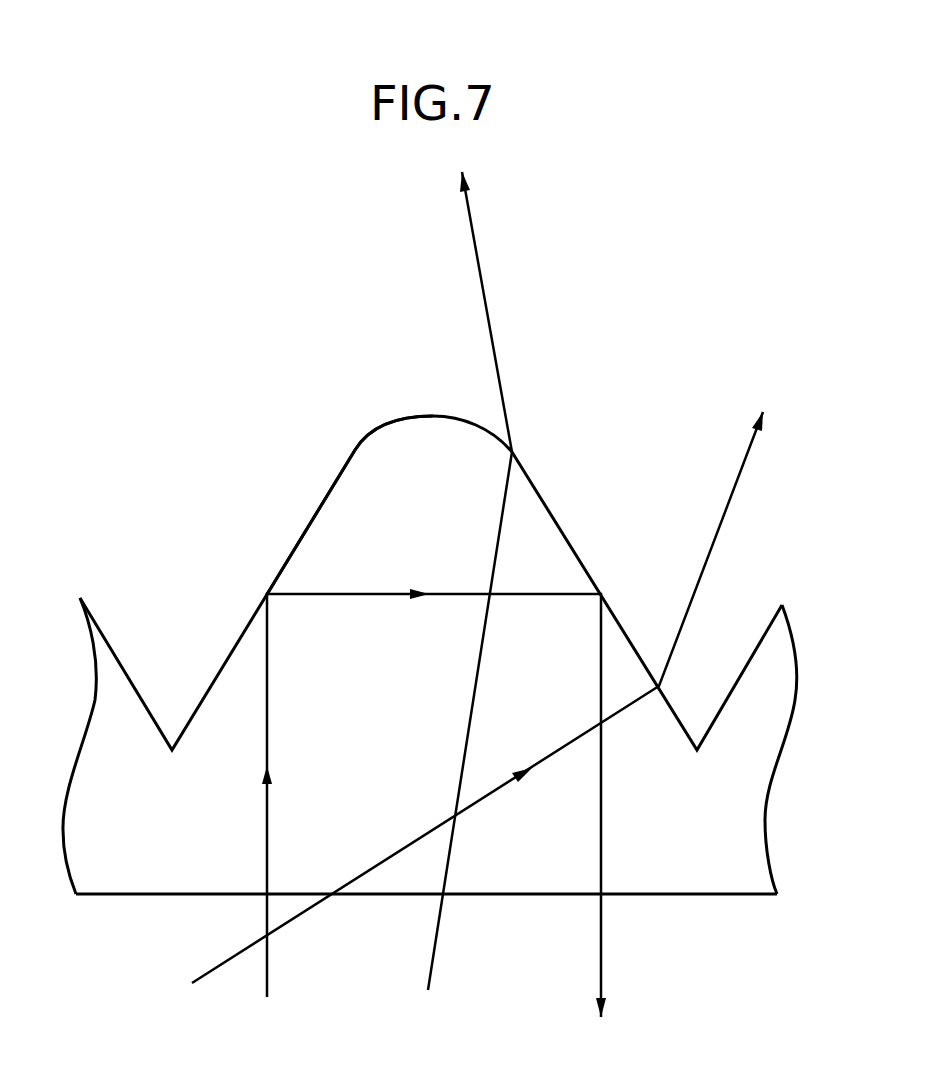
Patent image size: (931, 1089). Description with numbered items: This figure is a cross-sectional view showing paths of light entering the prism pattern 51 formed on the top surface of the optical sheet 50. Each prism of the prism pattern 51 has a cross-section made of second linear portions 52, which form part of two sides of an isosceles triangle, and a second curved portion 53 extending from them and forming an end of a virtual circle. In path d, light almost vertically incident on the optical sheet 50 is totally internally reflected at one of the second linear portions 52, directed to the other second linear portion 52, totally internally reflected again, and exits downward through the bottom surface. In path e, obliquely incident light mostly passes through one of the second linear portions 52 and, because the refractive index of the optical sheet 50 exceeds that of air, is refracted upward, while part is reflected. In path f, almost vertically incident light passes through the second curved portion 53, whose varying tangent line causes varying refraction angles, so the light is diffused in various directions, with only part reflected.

The optical sheet 50 is at (527, 903).
The prism pattern 51 is at (285, 405).
The second linear portions 52 is at (290, 555).
The second curved portion 53 is at (355, 450).
The path d is at (430, 806).
The path e is at (468, 714).
The path f is at (463, 597).